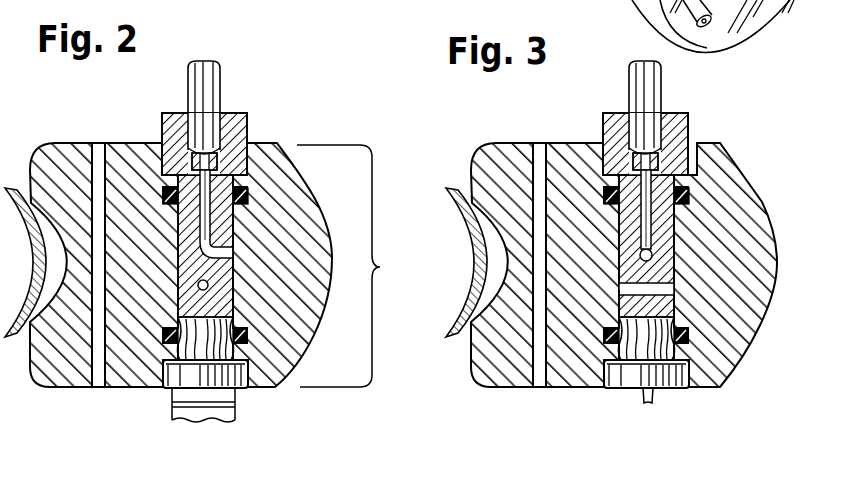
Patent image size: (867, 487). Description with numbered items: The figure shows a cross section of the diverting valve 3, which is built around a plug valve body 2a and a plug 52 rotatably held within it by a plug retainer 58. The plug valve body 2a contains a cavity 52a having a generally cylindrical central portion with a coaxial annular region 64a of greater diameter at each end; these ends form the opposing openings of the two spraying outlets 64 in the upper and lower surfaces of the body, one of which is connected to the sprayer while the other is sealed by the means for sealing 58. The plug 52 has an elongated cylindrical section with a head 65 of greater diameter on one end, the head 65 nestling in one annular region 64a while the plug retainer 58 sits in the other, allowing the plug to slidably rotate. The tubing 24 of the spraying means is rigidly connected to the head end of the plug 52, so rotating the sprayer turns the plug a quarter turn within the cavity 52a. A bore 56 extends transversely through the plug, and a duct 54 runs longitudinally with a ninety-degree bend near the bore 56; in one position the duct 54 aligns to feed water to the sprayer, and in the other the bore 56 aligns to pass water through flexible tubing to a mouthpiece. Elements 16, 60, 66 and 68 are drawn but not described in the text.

In FIG. 2, the plug valve body 2a is at (309, 184).
In FIG. 3, the plug valve body 2a is at (624, 265).
In FIG. 2, the diverting valve 3 is at (345, 266).
In FIG. 3, the tube 16 is at (458, 262).
In FIG. 2, the tubing 24 is at (187, 72).
In FIG. 3, the tubing 24 is at (629, 155).
In FIG. 2, the plug 52 is at (215, 238).
In FIG. 3, the plug 52 is at (603, 210).
In FIG. 2, the cavity 52a is at (178, 310).
In FIG. 3, the cavity 52a is at (564, 361).
In FIG. 2, the duct 54 is at (244, 252).
In FIG. 3, the duct 54 is at (732, 208).
In FIG. 2, the bore 56 is at (240, 284).
In FIG. 3, the bore 56 is at (712, 300).
In FIG. 2, the plug retainer 58 is at (167, 388).
In FIG. 3, the plug retainer 58 is at (641, 396).
In FIG. 2, the filter element 60 is at (164, 350).
In FIG. 3, the filter element 60 is at (621, 370).
In FIG. 2, the spraying outlets 64 is at (162, 157).
In FIG. 3, the spraying outlets 64 is at (704, 395).
In FIG. 2, the coaxial annular region 64a is at (124, 165).
In FIG. 3, the coaxial annular region 64a is at (699, 349).
In FIG. 2, the head 65 is at (247, 128).
In FIG. 3, the head 65 is at (655, 126).
In FIG. 2, the seal ring 66 is at (252, 196).
In FIG. 3, the seal ring 66 is at (722, 173).
In FIG. 2, the seal ring 68 is at (163, 190).
In FIG. 3, the seal ring 68 is at (594, 151).